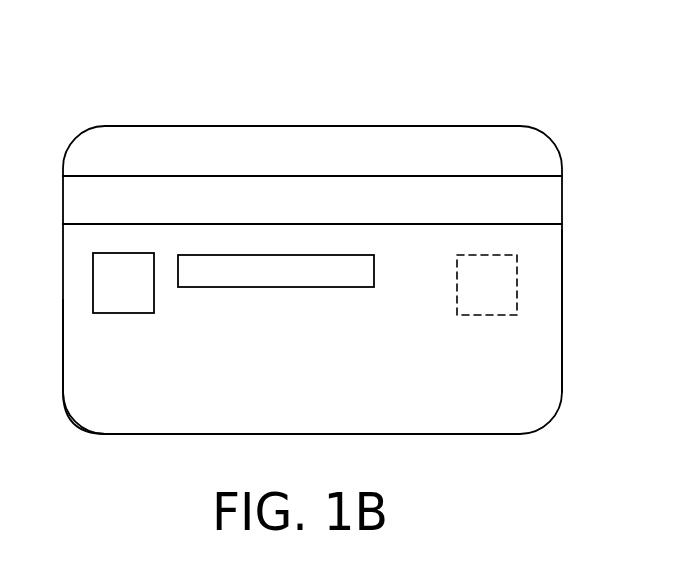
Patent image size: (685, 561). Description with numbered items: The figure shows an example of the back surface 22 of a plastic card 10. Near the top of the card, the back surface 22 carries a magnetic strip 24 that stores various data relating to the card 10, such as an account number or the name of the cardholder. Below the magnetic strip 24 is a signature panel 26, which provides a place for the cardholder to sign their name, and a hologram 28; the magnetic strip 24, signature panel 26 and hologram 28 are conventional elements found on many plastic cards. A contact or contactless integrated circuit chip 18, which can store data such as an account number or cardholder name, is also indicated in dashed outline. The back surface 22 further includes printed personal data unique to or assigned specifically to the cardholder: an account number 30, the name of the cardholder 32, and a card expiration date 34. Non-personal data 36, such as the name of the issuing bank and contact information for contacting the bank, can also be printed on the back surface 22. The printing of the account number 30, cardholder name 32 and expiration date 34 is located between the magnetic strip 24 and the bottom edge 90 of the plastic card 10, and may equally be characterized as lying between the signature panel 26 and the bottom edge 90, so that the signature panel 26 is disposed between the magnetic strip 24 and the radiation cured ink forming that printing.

The plastic card 10 is at (603, 106).
The integrated circuit chip 18 is at (497, 254).
The back surface 22 is at (547, 303).
The magnetic strip 24 is at (547, 197).
The signature panel 26 is at (207, 254).
The hologram 28 is at (135, 315).
The account number 30 is at (264, 342).
The name of the cardholder 32 is at (280, 400).
The card expiration date 34 is at (388, 340).
The non-personal data 36 is at (508, 375).
The bottom edge 90 is at (166, 437).